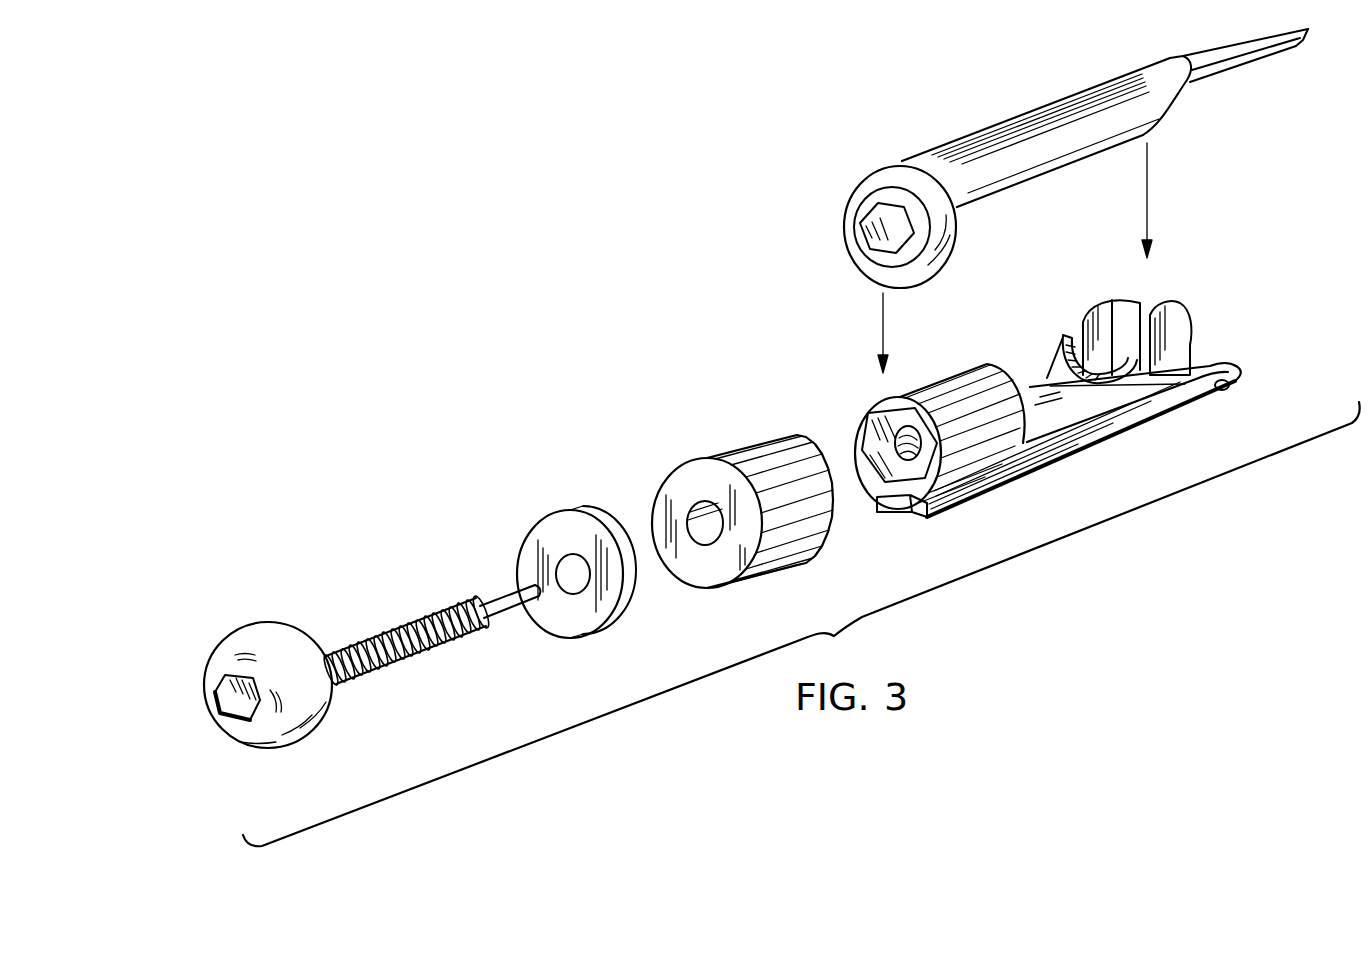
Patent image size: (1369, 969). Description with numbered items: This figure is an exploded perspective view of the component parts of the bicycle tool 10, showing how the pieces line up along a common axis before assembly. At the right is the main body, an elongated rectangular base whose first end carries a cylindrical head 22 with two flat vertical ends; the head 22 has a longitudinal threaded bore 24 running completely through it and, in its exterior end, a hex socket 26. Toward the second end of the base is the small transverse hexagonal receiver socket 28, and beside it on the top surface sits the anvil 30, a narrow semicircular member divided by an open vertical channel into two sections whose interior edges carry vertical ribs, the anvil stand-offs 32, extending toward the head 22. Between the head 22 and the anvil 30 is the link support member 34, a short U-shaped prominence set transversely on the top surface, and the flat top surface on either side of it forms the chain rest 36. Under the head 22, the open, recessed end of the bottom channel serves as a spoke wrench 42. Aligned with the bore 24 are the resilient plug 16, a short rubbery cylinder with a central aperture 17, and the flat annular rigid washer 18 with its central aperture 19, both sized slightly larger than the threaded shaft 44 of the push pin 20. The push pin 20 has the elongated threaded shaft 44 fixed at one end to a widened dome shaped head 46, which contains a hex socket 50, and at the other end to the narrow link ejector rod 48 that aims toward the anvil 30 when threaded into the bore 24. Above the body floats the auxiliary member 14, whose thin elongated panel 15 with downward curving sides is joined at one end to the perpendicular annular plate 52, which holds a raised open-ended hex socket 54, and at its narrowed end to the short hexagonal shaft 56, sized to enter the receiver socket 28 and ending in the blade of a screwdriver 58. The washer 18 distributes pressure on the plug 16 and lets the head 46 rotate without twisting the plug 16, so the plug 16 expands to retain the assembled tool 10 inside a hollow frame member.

The bicycle tool 10 is at (548, 326).
The auxiliary member 14 is at (940, 143).
The elongated panel 15 is at (1022, 108).
The resilient plug 16 is at (707, 458).
The central aperture 17 is at (708, 535).
The washer 18 is at (563, 505).
The central aperture 19 is at (575, 600).
The push pin 20 is at (383, 620).
The cylindrical head 22 is at (927, 392).
The threaded bore 24 is at (897, 460).
The hex socket 26 is at (870, 415).
The hexagonal receiver socket 28 is at (1230, 386).
The anvil 30 is at (1192, 298).
The anvil stand-offs 32 is at (1130, 297).
The link support member 34 is at (1062, 338).
The chain rest 36 is at (1150, 397).
The spoke wrench 42 is at (907, 512).
The threaded shaft 44 is at (410, 668).
The dome shaped head 46 is at (255, 620).
The link ejector rod 48 is at (503, 590).
The hex socket 50 is at (222, 683).
The annular plate 52 is at (867, 183).
The hex socket 54 is at (890, 227).
The hexagonal shaft 56 is at (1227, 77).
The screwdriver 58 is at (1307, 35).